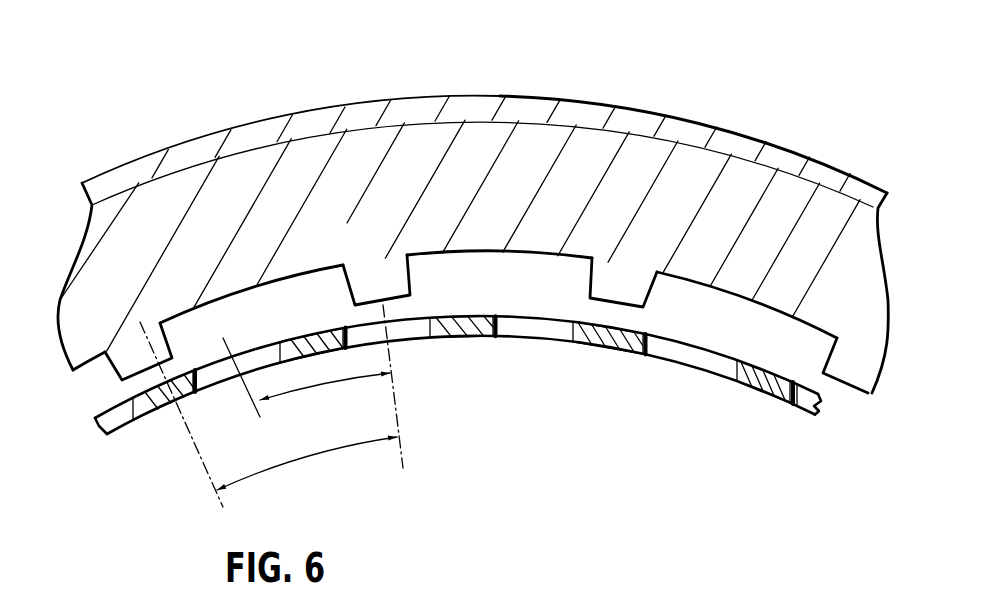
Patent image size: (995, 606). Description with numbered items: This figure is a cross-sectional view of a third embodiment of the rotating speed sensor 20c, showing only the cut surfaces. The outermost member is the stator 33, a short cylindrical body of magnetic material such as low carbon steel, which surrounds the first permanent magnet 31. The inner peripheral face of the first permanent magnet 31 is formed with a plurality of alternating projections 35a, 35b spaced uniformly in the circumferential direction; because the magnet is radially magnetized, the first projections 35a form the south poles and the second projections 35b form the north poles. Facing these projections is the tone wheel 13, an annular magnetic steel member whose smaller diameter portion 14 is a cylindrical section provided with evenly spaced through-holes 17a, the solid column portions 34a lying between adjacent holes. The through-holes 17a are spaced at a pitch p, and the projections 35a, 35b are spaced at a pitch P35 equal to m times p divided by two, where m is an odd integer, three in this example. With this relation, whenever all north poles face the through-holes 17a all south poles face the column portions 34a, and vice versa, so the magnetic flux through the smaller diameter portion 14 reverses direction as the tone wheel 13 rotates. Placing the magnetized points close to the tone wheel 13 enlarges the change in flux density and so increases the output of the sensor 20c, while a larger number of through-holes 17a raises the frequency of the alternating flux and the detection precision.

The sensor 20c is at (650, 101).
The stator 33 is at (362, 113).
The first permanent magnet 31 is at (535, 137).
The first projections 35a is at (118, 378).
The second projections 35b is at (410, 272).
The tone wheel 13 is at (752, 362).
The through-holes 17a is at (284, 350).
The column portions 34a is at (186, 376).
The smaller diameter portion 14 is at (793, 373).
The pitch of the through-holes p is at (308, 397).
The pitch of the alternating projections P35 is at (340, 450).